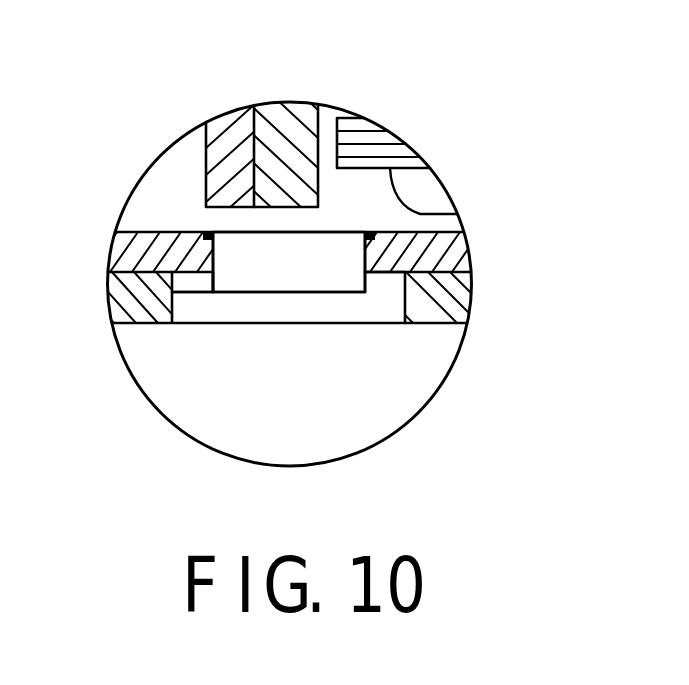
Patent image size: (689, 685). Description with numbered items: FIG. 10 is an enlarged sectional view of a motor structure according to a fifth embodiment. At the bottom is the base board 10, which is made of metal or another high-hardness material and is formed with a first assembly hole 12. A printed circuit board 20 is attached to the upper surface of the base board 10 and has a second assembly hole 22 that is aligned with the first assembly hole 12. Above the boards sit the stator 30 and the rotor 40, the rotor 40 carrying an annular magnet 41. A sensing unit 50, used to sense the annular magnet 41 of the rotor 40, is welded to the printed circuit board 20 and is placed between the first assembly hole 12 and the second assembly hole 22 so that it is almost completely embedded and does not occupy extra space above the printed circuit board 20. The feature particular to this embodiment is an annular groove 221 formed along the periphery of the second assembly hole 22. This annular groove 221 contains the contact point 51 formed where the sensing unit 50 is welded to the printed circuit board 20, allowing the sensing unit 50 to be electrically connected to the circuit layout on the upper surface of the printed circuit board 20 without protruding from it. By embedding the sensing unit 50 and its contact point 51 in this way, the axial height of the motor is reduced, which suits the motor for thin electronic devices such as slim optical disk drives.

The base board 10 is at (440, 303).
The first assembly hole 12 is at (172, 292).
The printed circuit board 20 is at (433, 250).
The second assembly hole 22 is at (372, 272).
The annular groove 221 is at (380, 232).
The stator 30 is at (367, 152).
The rotor 40 is at (228, 145).
The annular magnet 41 is at (288, 148).
The sensing unit 50 is at (291, 257).
The contact point 51 is at (207, 233).